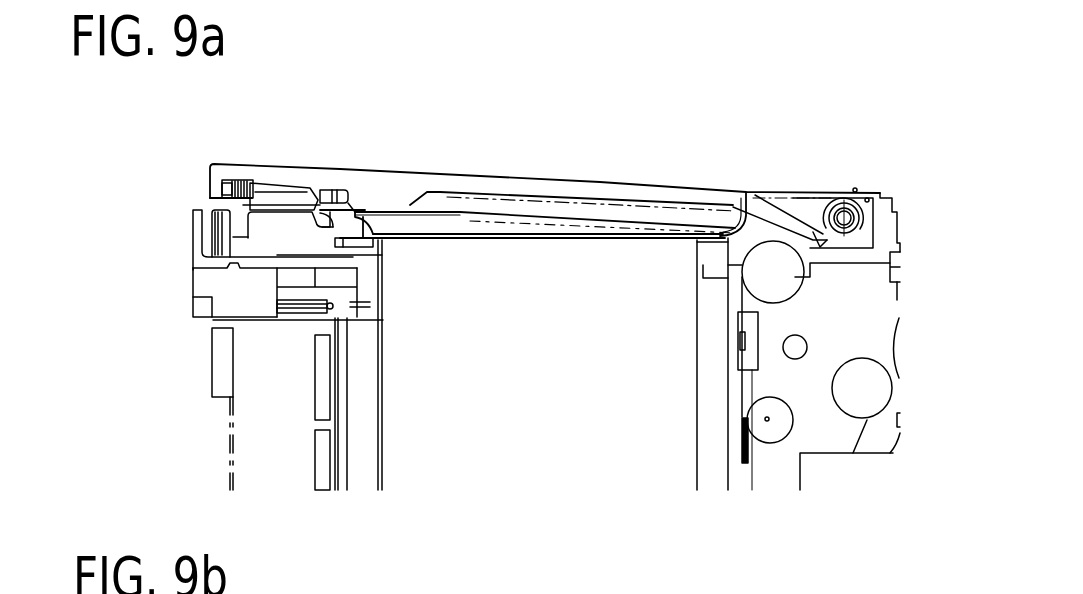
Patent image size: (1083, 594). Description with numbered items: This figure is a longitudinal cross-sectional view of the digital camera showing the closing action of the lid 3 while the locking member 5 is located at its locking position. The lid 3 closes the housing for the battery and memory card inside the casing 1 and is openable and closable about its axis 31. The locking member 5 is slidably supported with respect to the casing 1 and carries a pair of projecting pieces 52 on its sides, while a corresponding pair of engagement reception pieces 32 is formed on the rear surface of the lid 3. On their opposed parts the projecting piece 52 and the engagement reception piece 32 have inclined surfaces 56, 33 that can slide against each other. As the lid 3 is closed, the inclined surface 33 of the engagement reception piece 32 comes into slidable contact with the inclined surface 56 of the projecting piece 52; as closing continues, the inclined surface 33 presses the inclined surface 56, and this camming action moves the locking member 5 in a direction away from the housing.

The casing 1 is at (197, 222).
The lid 3 is at (543, 190).
The locking member 5 is at (272, 228).
The axis 31 is at (841, 200).
The engagement reception piece 32 is at (327, 205).
The inclined surface 33 is at (310, 222).
The projecting piece 52 is at (312, 225).
The inclined surface 56 is at (338, 222).